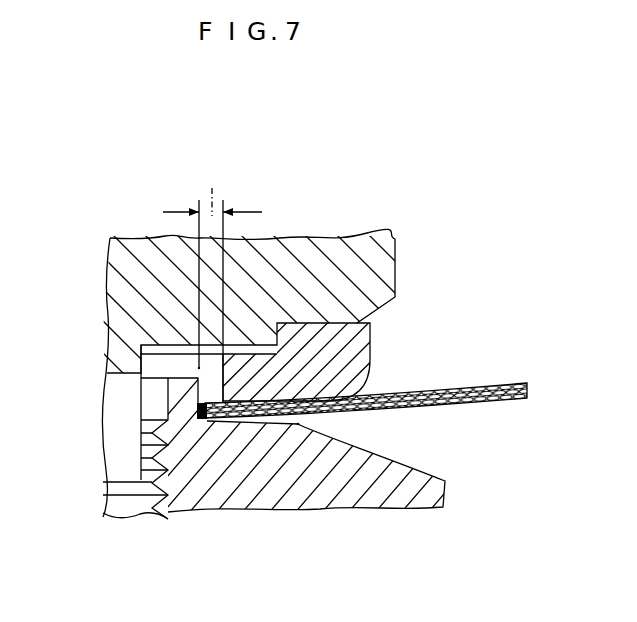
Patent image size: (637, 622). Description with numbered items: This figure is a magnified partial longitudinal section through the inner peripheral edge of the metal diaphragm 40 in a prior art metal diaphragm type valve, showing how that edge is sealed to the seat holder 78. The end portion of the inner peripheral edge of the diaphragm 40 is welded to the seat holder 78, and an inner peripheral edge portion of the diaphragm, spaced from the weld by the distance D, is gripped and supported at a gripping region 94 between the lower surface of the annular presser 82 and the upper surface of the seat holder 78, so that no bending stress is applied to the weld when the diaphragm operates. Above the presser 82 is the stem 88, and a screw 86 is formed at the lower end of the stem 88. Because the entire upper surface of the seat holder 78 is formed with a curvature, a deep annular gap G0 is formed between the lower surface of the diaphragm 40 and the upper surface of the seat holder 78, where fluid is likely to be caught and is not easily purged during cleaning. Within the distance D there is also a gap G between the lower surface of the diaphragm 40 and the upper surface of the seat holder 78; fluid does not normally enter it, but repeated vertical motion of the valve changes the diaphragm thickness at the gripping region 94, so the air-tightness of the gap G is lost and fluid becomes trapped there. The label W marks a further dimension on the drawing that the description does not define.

The stem 88 is at (397, 278).
The presser 82 is at (337, 346).
The diaphragm 40 is at (486, 386).
The seat holder 78 is at (425, 486).
The screw 86 is at (112, 498).
The gripping region 94 is at (218, 421).
The distance D is at (212, 282).
The wire position W is at (197, 404).
The gap G is at (209, 421).
The annular gap G0 is at (300, 426).